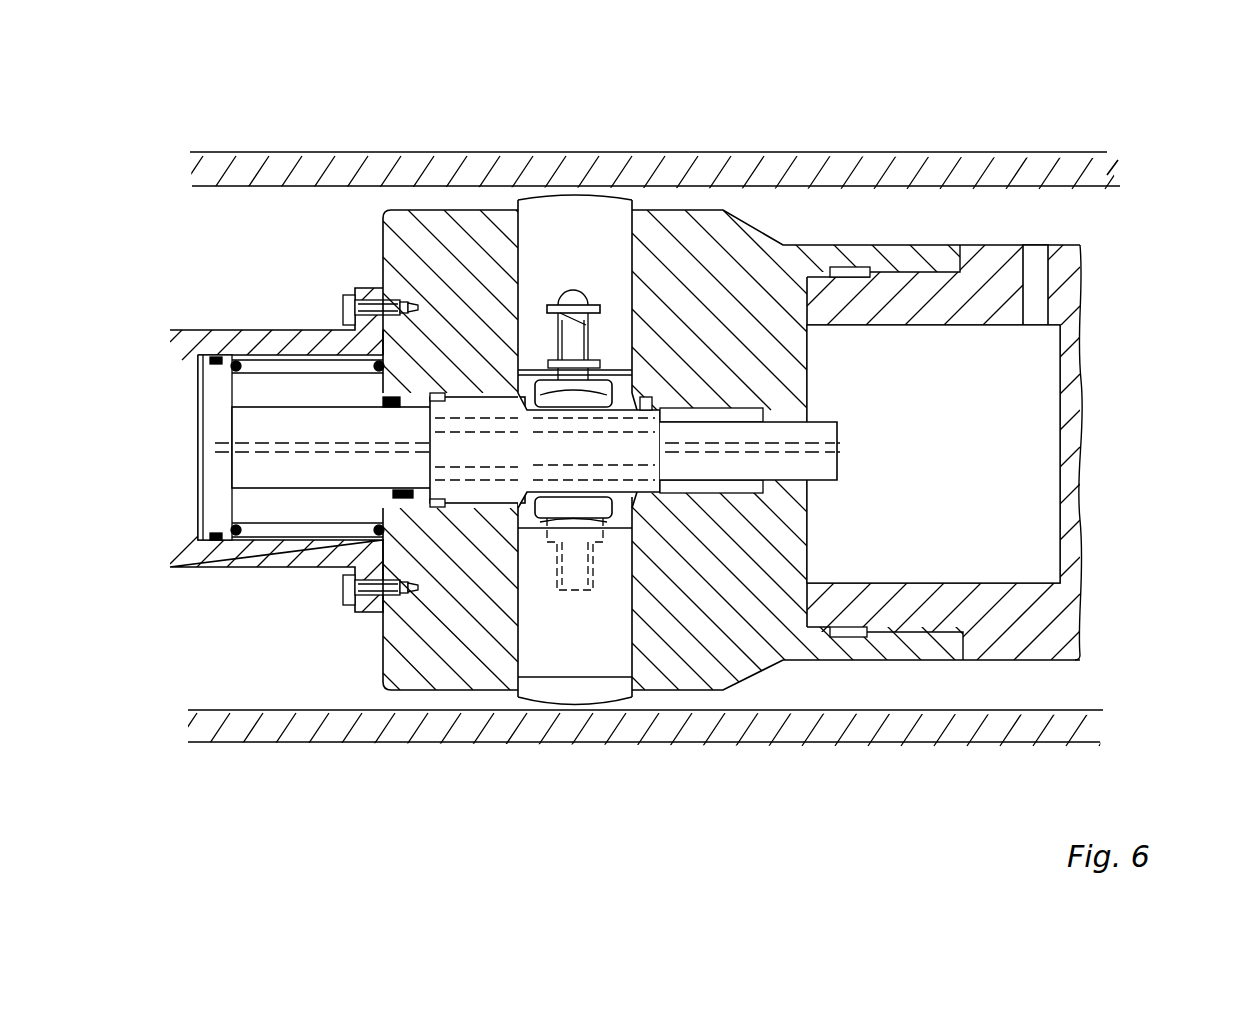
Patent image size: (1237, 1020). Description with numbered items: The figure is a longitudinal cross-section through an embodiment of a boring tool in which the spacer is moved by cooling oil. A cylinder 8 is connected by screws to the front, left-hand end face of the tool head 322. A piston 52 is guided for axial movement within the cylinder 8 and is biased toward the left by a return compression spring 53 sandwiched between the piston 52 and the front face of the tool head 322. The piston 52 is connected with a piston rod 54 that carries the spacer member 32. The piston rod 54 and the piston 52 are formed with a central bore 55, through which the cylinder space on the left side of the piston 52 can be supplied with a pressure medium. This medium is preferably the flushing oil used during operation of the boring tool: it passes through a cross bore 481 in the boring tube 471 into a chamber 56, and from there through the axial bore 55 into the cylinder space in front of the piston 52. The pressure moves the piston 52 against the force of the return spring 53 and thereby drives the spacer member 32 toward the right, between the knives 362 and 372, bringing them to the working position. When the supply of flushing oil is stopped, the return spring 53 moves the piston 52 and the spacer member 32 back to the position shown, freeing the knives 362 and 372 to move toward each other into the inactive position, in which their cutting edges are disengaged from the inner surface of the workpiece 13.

The workpiece 13 is at (935, 178).
The tool head 322 is at (436, 250).
The knife 362 is at (588, 255).
The knife 372 is at (592, 630).
The spacer member 32 is at (468, 490).
The cylinder 8 is at (200, 522).
The piston 52 is at (218, 492).
The return compression spring 53 is at (278, 528).
The piston rod 54 is at (362, 465).
The central bore 55 is at (707, 452).
The chamber 56 is at (1003, 492).
The boring tube 471 is at (1068, 372).
The cross bore 481 is at (1033, 295).